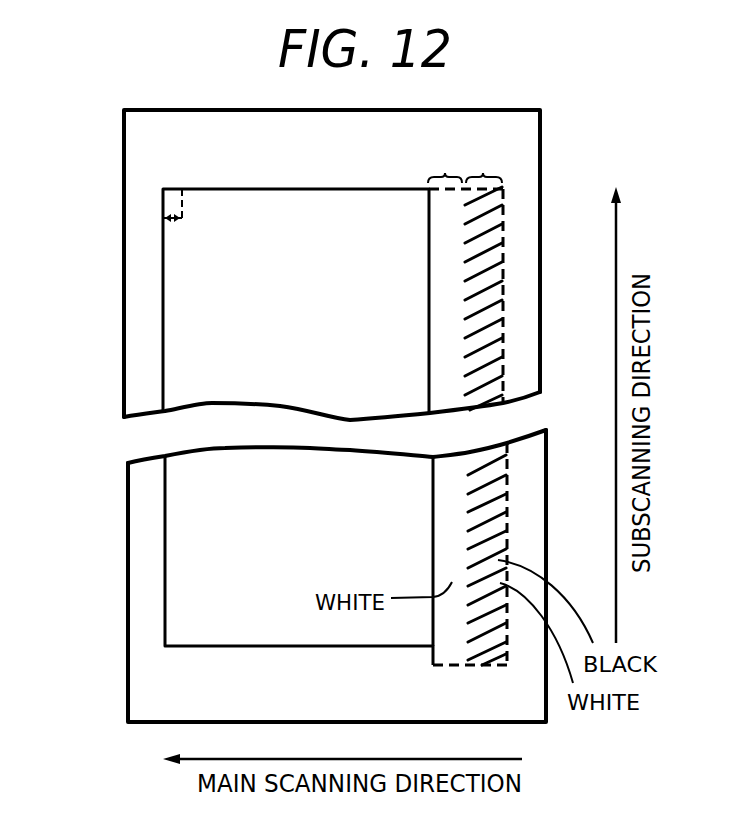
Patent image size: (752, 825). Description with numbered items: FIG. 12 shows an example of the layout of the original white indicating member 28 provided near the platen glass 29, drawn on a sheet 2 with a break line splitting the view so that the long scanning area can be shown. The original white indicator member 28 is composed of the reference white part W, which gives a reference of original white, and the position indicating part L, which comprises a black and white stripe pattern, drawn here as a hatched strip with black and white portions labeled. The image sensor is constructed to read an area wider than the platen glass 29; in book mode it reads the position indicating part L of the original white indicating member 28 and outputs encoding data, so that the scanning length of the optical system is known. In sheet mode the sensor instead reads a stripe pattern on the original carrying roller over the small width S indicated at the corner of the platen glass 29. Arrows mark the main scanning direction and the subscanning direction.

The document 2 is at (540, 128).
The original white indicator member 28 is at (503, 233).
The platen glass 29 is at (163, 270).